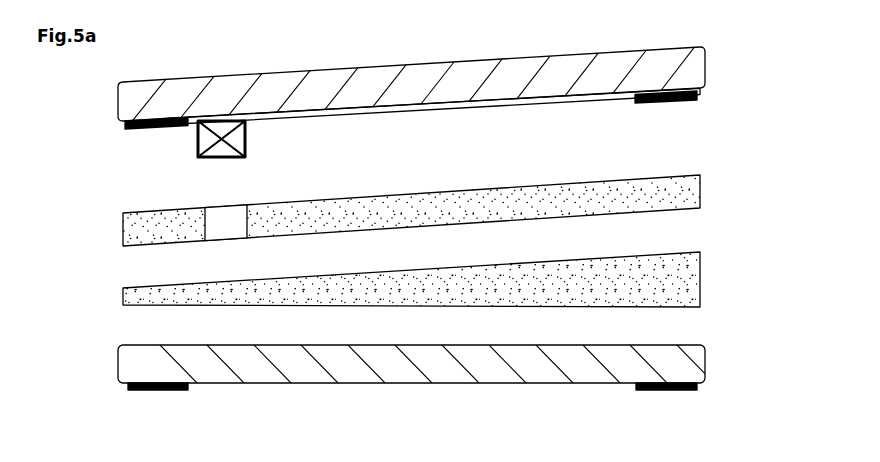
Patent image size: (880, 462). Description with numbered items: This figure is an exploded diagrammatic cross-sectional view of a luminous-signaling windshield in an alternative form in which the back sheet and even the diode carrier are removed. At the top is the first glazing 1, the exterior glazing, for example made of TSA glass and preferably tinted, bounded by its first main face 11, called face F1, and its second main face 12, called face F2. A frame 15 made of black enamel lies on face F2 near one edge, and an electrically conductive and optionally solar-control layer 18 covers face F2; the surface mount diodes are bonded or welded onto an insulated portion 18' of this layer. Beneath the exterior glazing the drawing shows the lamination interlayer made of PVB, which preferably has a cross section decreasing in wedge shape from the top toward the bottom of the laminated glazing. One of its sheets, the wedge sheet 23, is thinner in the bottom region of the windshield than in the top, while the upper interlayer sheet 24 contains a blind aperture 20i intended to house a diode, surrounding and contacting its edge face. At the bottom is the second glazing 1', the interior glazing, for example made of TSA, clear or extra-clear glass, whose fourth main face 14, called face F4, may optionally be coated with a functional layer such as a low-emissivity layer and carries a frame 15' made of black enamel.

The first glazing 1 is at (371, 78).
The first main face 11 is at (423, 62).
The second main face 12 is at (453, 106).
The frame 15 is at (112, 135).
The electrically conductive layer 18 is at (608, 115).
The insulated region 18' is at (231, 88).
The adhesive layer 24 is at (123, 230).
The blind aperture 20i is at (236, 232).
The wedge sheet 23 is at (123, 298).
The second glazing 1' is at (381, 381).
The frame 15' is at (118, 400).
The fourth main face 14 is at (500, 387).